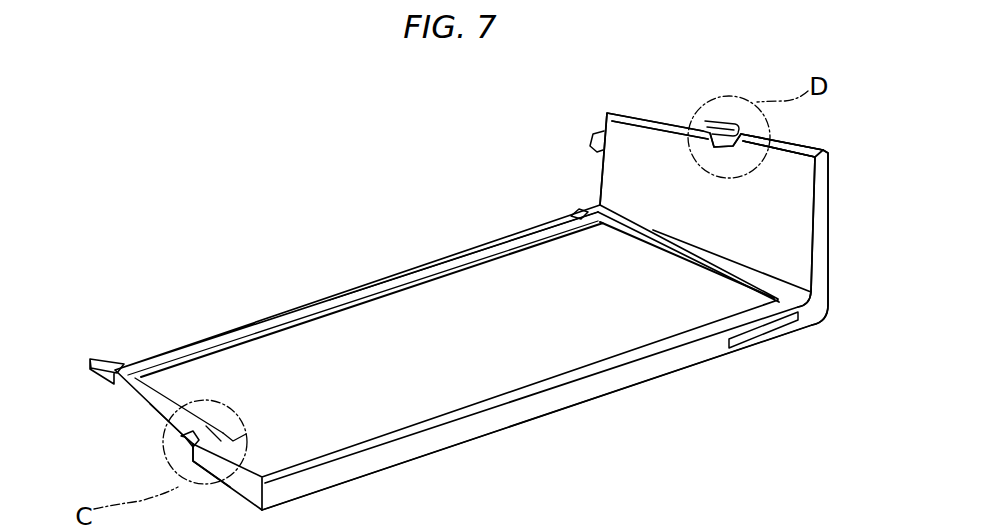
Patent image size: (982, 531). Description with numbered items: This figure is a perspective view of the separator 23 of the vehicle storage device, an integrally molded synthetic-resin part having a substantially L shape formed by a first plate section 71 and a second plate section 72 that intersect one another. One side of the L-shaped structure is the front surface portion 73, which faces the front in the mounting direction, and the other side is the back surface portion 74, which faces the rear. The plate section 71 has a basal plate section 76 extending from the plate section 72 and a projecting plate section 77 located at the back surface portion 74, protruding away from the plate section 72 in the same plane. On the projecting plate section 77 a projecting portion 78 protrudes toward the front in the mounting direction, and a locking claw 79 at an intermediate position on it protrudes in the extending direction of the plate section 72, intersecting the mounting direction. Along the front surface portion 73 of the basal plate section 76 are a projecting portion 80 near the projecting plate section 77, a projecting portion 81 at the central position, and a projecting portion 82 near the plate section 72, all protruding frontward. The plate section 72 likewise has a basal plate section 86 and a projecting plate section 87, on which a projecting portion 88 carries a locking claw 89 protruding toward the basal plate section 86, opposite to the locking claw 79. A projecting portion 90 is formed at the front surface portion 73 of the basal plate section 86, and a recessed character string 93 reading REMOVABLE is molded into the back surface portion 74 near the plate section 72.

The separator 23 is at (106, 266).
The first plate section 71 is at (443, 313).
The second plate section 72 is at (827, 217).
The front surface portion 73 is at (478, 246).
The back surface portion 74 is at (567, 400).
The basal plate section 76 is at (292, 372).
The projecting plate section 77 is at (197, 457).
The projecting portion 78 is at (185, 446).
The locking claw 79 is at (178, 423).
The projecting portion 80 is at (100, 360).
The projecting portion 81 is at (344, 291).
The projecting portion 82 is at (574, 212).
The basal plate section 86 is at (747, 222).
The projecting plate section 87 is at (806, 148).
The projecting portion 88 is at (706, 121).
The locking claw 89 is at (729, 147).
The projecting portion 90 is at (596, 138).
The character string 93 is at (757, 335).